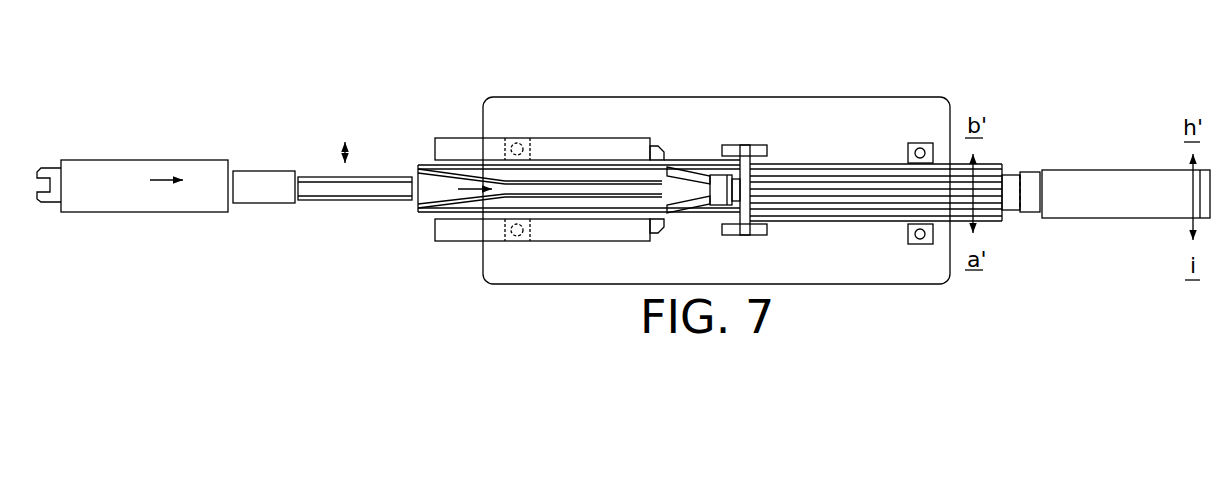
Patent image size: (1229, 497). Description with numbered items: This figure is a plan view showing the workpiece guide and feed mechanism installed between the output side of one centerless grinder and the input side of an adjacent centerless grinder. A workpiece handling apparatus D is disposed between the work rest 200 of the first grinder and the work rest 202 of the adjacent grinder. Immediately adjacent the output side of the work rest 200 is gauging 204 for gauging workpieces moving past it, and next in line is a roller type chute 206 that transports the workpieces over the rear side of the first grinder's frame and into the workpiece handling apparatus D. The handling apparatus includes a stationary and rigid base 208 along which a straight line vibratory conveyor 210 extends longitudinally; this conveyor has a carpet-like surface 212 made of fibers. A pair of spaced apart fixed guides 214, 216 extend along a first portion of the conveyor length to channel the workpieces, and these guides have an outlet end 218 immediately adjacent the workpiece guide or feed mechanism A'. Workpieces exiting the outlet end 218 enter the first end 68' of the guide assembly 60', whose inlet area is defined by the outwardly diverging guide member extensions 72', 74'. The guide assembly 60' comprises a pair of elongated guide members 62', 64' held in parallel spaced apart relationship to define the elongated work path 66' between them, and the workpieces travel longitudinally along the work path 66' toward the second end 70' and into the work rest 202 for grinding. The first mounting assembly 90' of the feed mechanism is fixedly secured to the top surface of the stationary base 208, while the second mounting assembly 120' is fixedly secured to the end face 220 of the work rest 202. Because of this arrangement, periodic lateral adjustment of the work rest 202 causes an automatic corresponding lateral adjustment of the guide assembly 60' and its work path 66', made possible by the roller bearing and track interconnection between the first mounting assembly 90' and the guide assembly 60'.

The workpiece handling apparatus D is at (678, 90).
The work rest 200 is at (167, 202).
The gauging 204 is at (275, 200).
The roller type chute 206 is at (367, 192).
The base 208 is at (780, 105).
The vibratory conveyor 210 is at (690, 155).
The carpet-like surface 212 is at (720, 170).
The fixed guide 214 is at (462, 205).
The fixed guide 216 is at (468, 173).
The outlet end 218 is at (663, 190).
The first end 68' is at (669, 144).
The guide member extension 72' is at (669, 237).
The guide member extension 74' is at (712, 133).
The first mounting assembly 90' is at (719, 226).
The guide assembly 60' is at (876, 171).
The guide member 62' is at (876, 240).
The guide member 64' is at (876, 143).
The work path 66' is at (876, 233).
The second end 70' is at (1017, 168).
The workpiece guide or feed mechanism A' is at (867, 104).
The second mounting assembly 120' is at (1068, 173).
The end face 220 is at (1025, 215).
The work rest 202 is at (1115, 210).